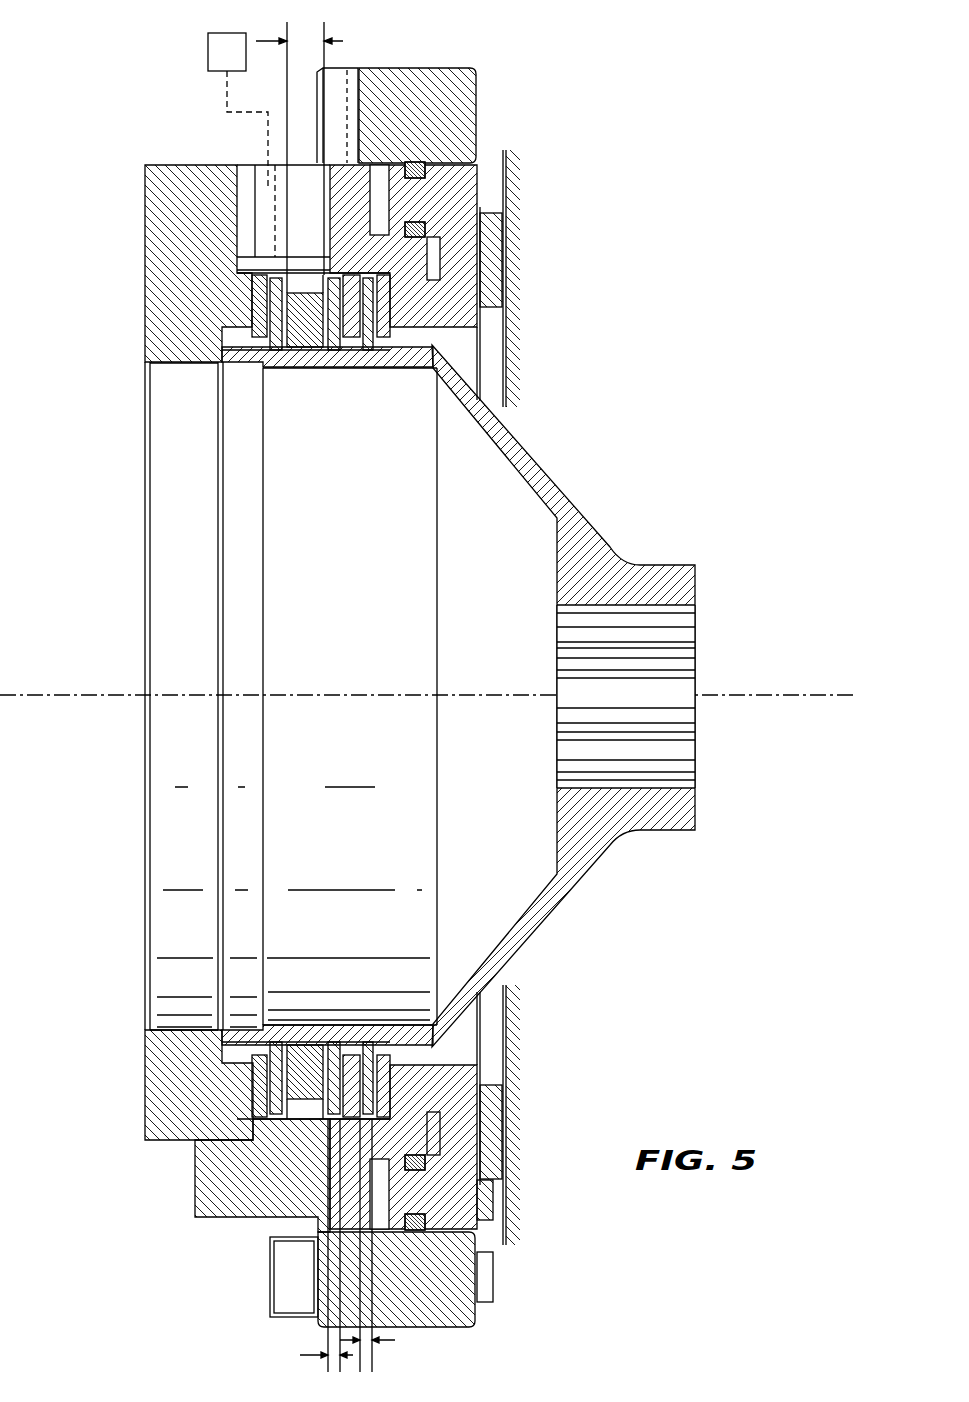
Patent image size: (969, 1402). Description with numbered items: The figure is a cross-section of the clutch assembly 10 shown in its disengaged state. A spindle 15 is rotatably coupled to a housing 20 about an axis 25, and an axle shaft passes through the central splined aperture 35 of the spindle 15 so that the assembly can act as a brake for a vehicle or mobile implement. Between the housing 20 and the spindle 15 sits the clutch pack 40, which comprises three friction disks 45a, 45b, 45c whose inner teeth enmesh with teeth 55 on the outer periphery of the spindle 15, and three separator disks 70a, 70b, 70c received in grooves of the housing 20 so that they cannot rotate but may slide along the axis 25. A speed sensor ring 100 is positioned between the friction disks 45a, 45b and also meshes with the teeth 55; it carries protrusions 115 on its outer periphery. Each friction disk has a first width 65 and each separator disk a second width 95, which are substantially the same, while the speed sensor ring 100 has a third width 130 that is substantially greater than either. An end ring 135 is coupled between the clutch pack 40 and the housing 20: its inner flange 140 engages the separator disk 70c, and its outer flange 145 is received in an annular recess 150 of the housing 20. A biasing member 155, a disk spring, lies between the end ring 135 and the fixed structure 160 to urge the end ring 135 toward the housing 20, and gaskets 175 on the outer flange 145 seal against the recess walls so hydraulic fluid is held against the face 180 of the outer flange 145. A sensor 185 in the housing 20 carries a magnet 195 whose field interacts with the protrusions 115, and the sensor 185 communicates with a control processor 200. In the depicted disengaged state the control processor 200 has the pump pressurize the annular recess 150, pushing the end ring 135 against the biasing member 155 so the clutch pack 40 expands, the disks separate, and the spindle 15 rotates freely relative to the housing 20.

The clutch assembly 10 is at (673, 148).
The spindle 15 is at (610, 548).
The housing 20 is at (145, 323).
The axis 25 is at (783, 695).
The central splined aperture 35 is at (718, 748).
The clutch pack 40 is at (272, 1150).
The friction disk 45a is at (248, 319).
The friction disk 45b is at (352, 345).
The friction disk 45c is at (387, 370).
The teeth 55 is at (440, 338).
The first width 65 is at (300, 1355).
The separator disk 70a is at (260, 1090).
The separator disk 70b is at (347, 1067).
The separator disk 70c is at (378, 1093).
The second width 95 is at (395, 1340).
The speed sensor ring 100 is at (292, 345).
The protrusions 115 is at (293, 1110).
The third width 130 is at (343, 41).
The end ring 135 is at (453, 1202).
The inner flange 140 is at (407, 1028).
The outer flange 145 is at (398, 1233).
The annular recess 150 is at (380, 182).
The biasing member 155 is at (486, 208).
The fixed structure 160 is at (508, 172).
The gaskets 175 is at (400, 200).
The face 180 is at (480, 251).
The sensor 185 is at (250, 182).
The magnet 195 is at (233, 267).
The control processor 200 is at (208, 53).